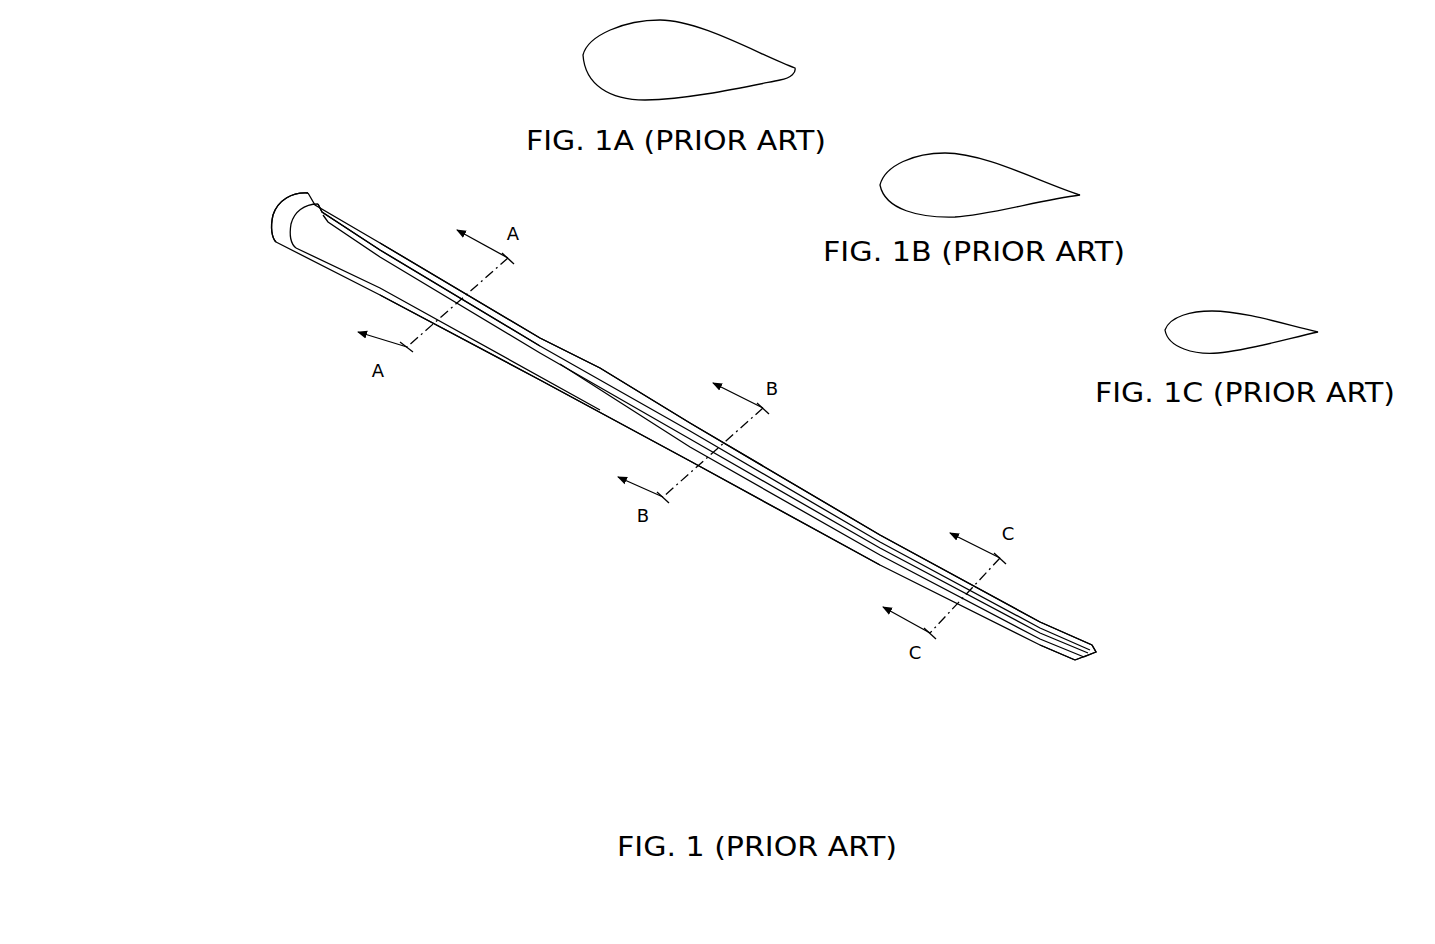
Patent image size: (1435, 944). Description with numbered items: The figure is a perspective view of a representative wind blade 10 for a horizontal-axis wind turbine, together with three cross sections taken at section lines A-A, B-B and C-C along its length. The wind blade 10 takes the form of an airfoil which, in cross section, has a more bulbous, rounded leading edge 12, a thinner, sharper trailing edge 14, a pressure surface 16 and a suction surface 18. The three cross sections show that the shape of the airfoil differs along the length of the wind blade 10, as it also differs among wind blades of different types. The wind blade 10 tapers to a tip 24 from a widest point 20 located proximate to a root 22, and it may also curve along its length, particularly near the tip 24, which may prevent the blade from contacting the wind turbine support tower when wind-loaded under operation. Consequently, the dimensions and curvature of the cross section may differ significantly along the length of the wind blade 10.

The wind blade 10 is at (355, 630).
The leading edge 12 is at (578, 405).
The trailing edge 14 is at (873, 530).
The pressure surface 16 is at (592, 368).
The suction surface 18 is at (747, 497).
The widest point 20 is at (347, 232).
The root 22 is at (273, 226).
The tip 24 is at (1097, 653).